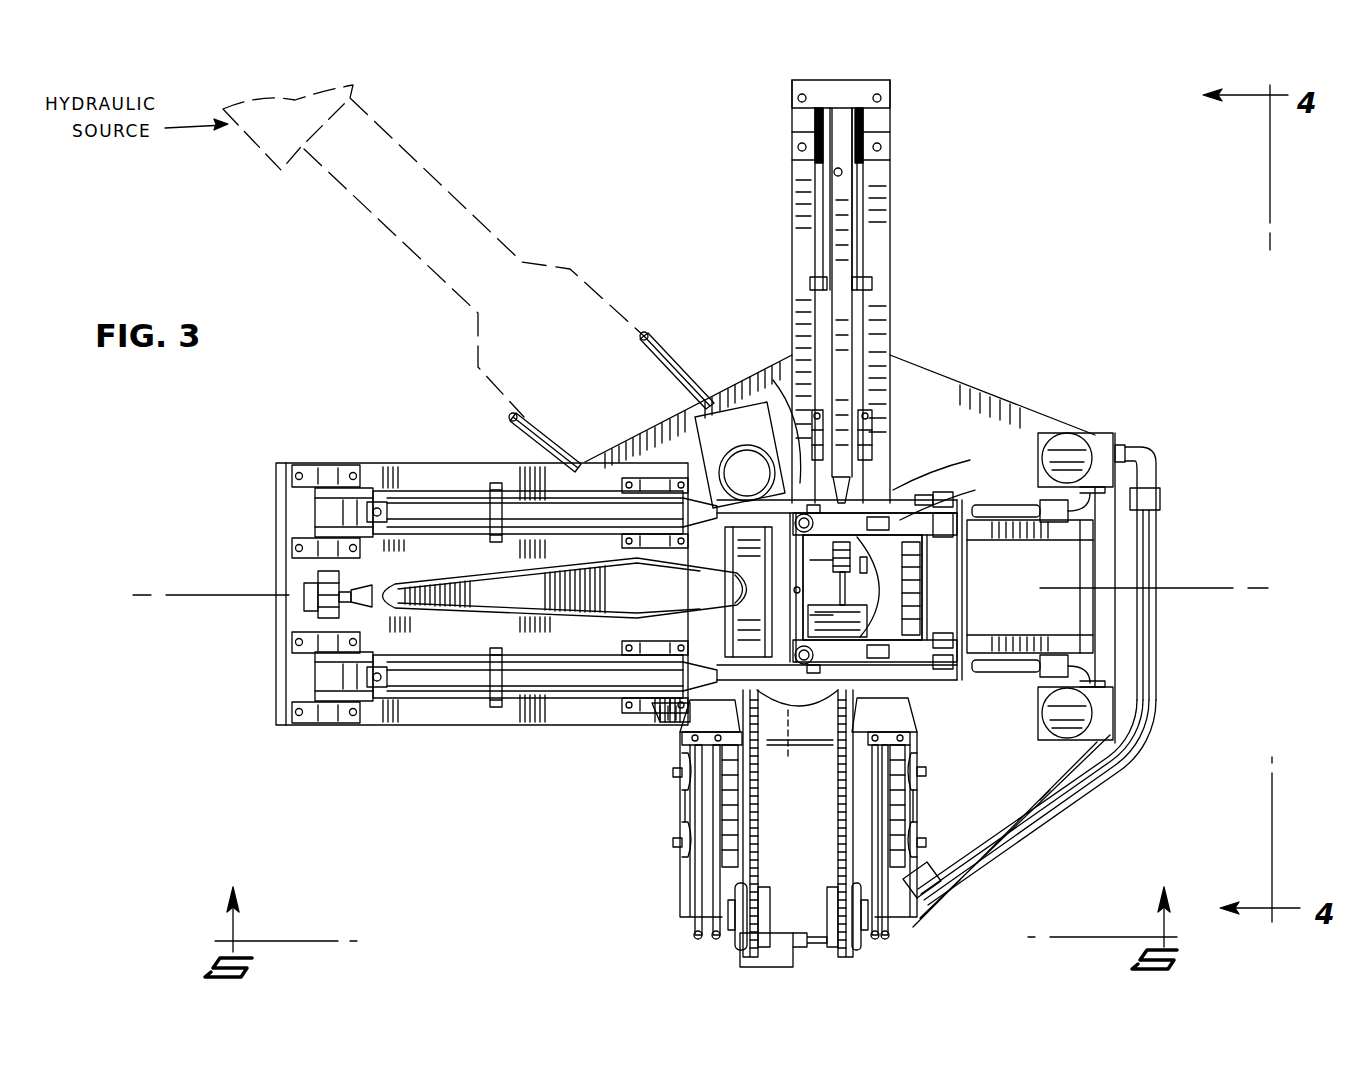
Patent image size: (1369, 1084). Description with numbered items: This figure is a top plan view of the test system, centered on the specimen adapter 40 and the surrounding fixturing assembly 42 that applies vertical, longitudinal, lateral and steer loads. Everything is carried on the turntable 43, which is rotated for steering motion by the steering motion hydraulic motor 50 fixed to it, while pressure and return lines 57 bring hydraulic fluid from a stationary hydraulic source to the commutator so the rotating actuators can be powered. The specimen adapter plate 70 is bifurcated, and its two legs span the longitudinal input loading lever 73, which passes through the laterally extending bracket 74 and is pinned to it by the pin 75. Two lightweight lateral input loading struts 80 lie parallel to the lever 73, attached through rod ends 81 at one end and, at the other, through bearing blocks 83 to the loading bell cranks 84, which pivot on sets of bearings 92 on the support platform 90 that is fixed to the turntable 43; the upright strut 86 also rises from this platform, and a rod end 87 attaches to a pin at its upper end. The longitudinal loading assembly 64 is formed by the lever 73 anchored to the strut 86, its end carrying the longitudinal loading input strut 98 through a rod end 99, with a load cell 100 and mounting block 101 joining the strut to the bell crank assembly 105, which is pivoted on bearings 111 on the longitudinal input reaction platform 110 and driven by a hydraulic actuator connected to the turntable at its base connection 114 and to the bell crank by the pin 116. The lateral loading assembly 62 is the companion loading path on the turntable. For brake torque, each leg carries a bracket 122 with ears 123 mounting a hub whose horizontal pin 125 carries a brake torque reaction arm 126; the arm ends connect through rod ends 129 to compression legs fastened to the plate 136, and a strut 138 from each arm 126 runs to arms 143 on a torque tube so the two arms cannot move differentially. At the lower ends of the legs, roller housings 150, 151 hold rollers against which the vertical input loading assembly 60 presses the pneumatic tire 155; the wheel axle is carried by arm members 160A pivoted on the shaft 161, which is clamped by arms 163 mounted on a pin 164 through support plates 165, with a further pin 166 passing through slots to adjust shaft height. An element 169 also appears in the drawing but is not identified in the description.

The specimen adapter 40 is at (696, 630).
The fixturing assembly 42 is at (660, 745).
The turntable 43 is at (783, 365).
The steering motion hydraulic motor 50 is at (686, 470).
The pressure and return lines 57 is at (662, 358).
The vertical input loading assembly 60 is at (662, 913).
The lateral loading assembly 62 is at (420, 716).
The longitudinal loading assembly 64 is at (893, 296).
The specimen adapter plate 70 is at (724, 545).
The longitudinal input loading lever 73 is at (478, 588).
The bracket 74 is at (805, 600).
The pin 75 is at (790, 592).
The lateral input loading struts 80 is at (540, 517).
The rod ends 81 is at (798, 470).
The bearing blocks 83 is at (312, 675).
The loading bell cranks 84 is at (445, 488).
The upright strut 86 is at (316, 577).
The rod end 87 is at (303, 598).
The support platform 90 is at (560, 690).
The bearings 92 is at (348, 463).
The longitudinal loading input strut 98 is at (842, 330).
The rod end 99 is at (890, 570).
The load cell 100 is at (845, 172).
The mounting block 101 is at (858, 122).
The bell crank assembly 105 is at (863, 253).
The longitudinal input reaction platform 110 is at (870, 372).
The bearings 111 is at (890, 100).
The actuator base connection 114 is at (880, 445).
The pin 116 is at (810, 283).
The bracket 122 is at (905, 498).
The ears 123 is at (757, 523).
The horizontal pin 125 is at (905, 617).
The brake torque reaction arm 126 is at (936, 492).
The rod ends 129 is at (965, 507).
The plate 136 is at (955, 567).
The strut 138 is at (890, 517).
The arms 143 is at (940, 668).
The roller housing 150 is at (670, 718).
The roller housing 151 is at (700, 572).
The pneumatic tire 155 is at (799, 745).
The arm members 160A is at (758, 859).
The shaft 161 is at (707, 937).
The arms 163 is at (700, 878).
The pin 164 is at (673, 772).
The support plates 165 is at (887, 812).
The pin 166 is at (917, 830).
The pipe 169 is at (688, 835).